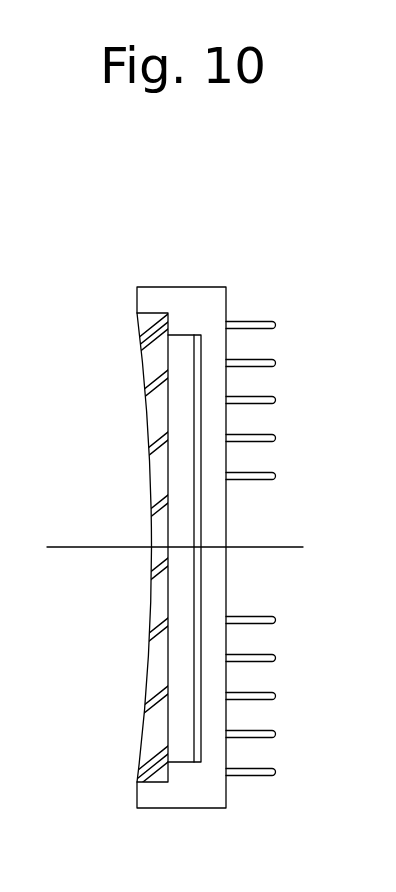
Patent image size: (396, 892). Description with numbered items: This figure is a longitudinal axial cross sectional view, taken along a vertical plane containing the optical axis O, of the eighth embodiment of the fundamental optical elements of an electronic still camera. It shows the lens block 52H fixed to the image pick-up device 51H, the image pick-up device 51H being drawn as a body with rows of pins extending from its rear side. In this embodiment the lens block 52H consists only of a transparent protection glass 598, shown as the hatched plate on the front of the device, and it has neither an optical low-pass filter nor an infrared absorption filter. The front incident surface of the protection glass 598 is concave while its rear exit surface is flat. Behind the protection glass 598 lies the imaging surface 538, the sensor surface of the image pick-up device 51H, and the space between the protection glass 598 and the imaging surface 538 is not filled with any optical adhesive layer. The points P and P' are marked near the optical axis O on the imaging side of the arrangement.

The image pick-up device 51H is at (199, 306).
The transparent protection glass 598 is at (125, 518).
The lens block 52H is at (150, 314).
The imaging surface 538 is at (201, 470).
The point P is at (258, 479).
The point P prime P' is at (278, 519).
The optical axis O is at (191, 548).